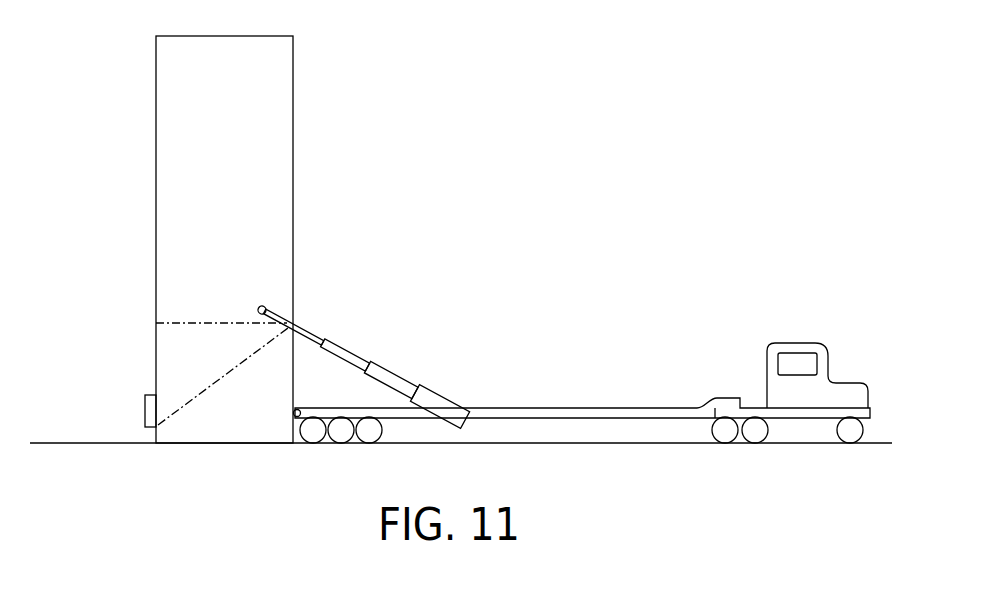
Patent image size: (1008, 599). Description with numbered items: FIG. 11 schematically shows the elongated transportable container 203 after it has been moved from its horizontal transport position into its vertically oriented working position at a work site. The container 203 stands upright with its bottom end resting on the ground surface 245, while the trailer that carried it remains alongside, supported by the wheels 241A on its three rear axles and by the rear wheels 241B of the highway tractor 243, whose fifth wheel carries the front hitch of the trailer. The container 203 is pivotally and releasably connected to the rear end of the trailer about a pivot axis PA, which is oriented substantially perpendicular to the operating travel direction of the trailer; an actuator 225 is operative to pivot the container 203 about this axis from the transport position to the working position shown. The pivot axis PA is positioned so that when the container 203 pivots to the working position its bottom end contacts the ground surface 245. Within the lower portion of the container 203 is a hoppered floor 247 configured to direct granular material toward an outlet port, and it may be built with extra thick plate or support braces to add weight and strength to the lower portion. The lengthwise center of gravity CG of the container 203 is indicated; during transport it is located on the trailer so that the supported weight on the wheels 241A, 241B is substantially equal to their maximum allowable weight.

The elongated transportable container 203 is at (293, 117).
The actuator 225 is at (387, 363).
The wheels on the three rear axles 241A is at (383, 428).
The rear wheels of the tractor 241B is at (712, 432).
The highway tractor 243 is at (808, 340).
The ground surface 245 is at (101, 443).
The hoppered floor 247 is at (210, 388).
The center of gravity CG is at (156, 342).
The pivot axis PA is at (295, 408).